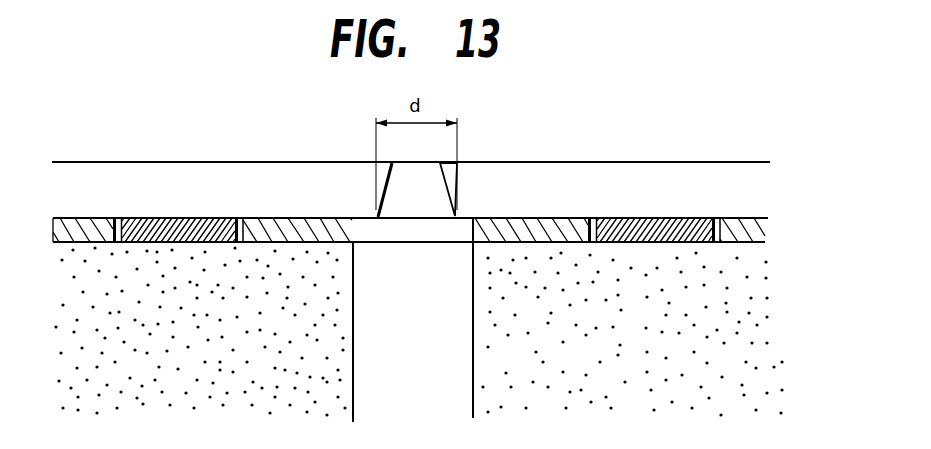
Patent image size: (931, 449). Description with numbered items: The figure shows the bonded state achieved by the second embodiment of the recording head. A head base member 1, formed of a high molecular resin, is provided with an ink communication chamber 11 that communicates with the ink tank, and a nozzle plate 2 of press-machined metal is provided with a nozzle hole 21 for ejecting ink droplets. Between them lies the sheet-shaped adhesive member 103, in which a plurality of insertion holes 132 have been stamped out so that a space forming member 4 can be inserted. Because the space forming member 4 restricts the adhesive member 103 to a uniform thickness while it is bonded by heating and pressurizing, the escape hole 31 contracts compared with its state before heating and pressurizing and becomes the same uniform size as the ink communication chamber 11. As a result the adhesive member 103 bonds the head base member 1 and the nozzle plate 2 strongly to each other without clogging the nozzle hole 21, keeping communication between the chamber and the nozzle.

The head base member 1 is at (633, 260).
The nozzle plate 2 is at (698, 193).
The space forming member 4 is at (672, 220).
The ink communication chamber 11 is at (463, 270).
The nozzle hole 21 is at (391, 196).
The escape hole 31 is at (448, 232).
The sheet-shaped adhesive member 103 is at (738, 220).
The insertion holes 132 is at (593, 220).